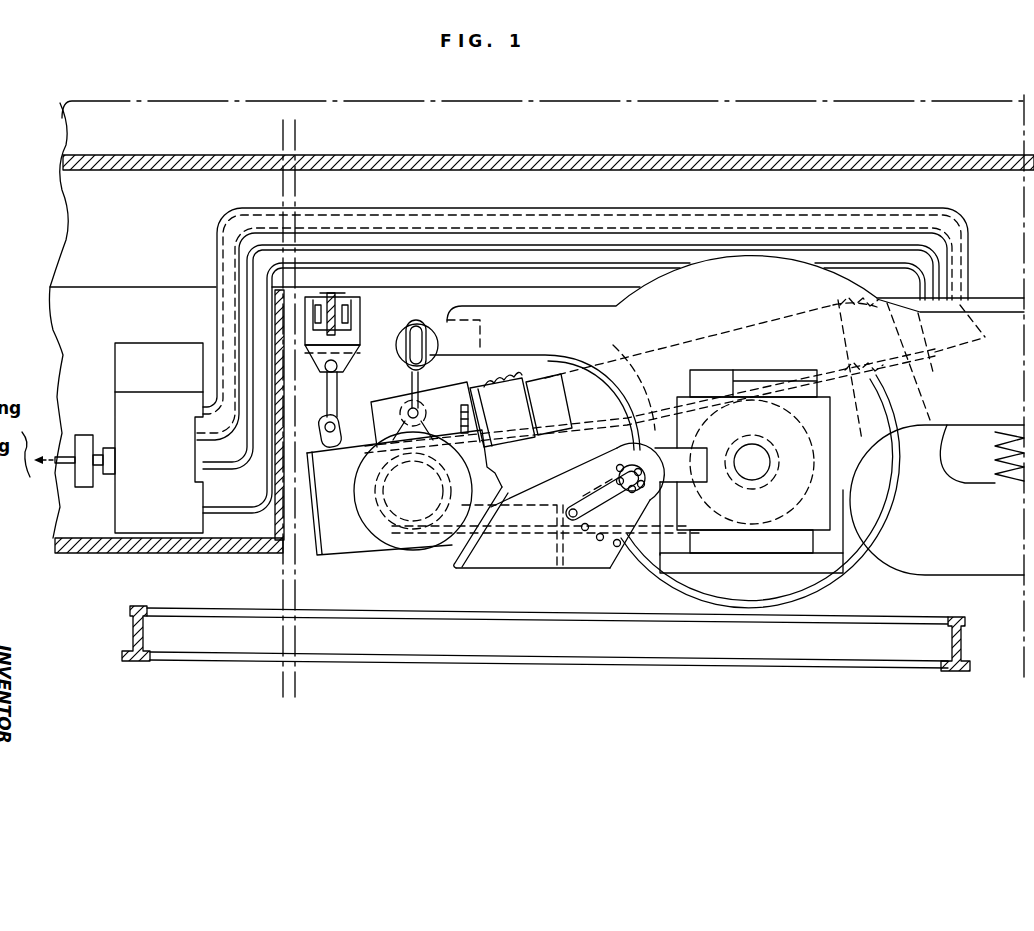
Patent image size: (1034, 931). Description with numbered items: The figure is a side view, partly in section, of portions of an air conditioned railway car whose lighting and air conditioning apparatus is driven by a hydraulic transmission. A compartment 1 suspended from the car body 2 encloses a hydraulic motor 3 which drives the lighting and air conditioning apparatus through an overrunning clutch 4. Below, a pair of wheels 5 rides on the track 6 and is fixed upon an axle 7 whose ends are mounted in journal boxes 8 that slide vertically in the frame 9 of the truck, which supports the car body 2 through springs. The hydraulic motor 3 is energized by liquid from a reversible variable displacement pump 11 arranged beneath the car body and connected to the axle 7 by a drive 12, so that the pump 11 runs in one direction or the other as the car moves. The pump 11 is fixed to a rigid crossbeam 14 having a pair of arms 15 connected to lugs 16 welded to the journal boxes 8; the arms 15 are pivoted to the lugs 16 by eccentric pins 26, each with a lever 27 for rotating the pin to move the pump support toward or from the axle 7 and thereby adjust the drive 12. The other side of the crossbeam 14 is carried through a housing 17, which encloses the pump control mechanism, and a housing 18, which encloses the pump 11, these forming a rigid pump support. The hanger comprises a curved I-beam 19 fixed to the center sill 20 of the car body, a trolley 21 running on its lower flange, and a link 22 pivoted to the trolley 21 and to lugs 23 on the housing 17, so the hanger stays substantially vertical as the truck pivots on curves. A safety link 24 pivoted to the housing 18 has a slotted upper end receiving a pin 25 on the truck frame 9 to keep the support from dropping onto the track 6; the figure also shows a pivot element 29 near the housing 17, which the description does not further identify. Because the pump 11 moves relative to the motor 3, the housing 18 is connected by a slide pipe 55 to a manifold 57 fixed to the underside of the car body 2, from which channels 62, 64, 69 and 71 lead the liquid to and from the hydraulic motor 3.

The compartment 1 is at (244, 527).
The car body 2 is at (125, 287).
The hydraulic motor 3 is at (104, 357).
The overrunning clutch 4 is at (83, 478).
The wheels 5 is at (862, 575).
The track 6 is at (813, 648).
The axle 7 is at (761, 467).
The journal boxes 8 is at (813, 513).
The truck frame 9 is at (753, 292).
The reversible variable displacement pump 11 is at (412, 560).
The drive 12 is at (522, 536).
The crossbeam 14 is at (527, 572).
The arms 15 is at (597, 553).
The lugs 16 is at (687, 470).
The housing 17 is at (343, 485).
The housing 18 is at (455, 550).
The I-beam 19 is at (331, 290).
The center sill 20 is at (70, 272).
The trolley 21 is at (355, 340).
The link 22 is at (337, 390).
The lugs 23 is at (343, 445).
The link 24 is at (421, 378).
The pin 25 is at (410, 348).
The eccentric pins 26 is at (646, 490).
The lever 27 is at (607, 494).
The pivot pin 29 is at (458, 432).
The slide pipe 55 is at (598, 397).
The manifold 57 is at (940, 355).
The channel 62 is at (214, 405).
The channel 64 is at (213, 467).
The channel 69 is at (918, 283).
The channel 71 is at (213, 438).